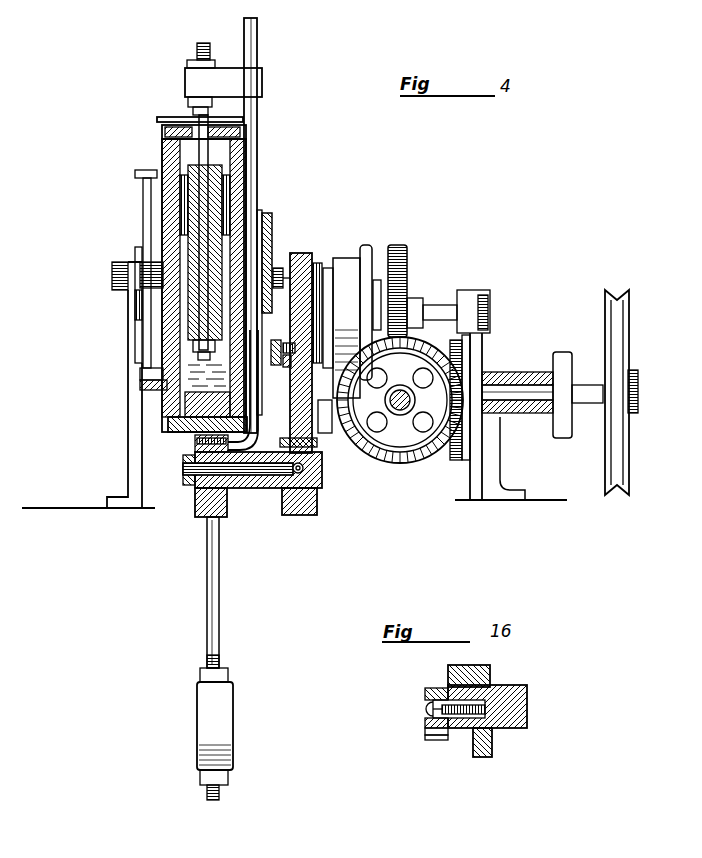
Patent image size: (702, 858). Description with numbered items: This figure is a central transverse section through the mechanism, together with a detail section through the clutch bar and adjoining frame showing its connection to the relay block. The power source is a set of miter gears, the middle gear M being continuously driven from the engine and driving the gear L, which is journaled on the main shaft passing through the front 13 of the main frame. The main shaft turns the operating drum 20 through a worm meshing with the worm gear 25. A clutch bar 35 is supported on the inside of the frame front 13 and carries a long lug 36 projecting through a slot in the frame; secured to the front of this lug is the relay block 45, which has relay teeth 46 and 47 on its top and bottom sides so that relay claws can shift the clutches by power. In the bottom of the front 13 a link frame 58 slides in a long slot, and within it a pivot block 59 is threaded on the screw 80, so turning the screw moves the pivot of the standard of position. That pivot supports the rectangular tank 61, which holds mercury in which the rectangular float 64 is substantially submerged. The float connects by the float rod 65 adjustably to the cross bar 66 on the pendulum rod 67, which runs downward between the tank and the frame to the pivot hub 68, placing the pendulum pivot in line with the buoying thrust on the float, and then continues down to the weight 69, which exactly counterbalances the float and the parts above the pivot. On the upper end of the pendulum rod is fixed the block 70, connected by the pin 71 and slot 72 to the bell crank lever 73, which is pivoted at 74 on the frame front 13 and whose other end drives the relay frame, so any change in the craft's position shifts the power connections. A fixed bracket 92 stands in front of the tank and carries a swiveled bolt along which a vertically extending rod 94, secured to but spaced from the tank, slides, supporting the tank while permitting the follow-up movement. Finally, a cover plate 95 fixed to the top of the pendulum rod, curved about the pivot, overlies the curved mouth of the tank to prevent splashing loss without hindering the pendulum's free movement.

In FIG. 4, the front of the main frame 13 is at (312, 443).
In FIG. 16, the front of the main frame 13 is at (494, 748).
In FIG. 4, the operating drum 20 is at (352, 321).
In FIG. 4, the worm gear 25 is at (405, 281).
In FIG. 16, the clutch bar 35 is at (529, 700).
In FIG. 16, the long lug 36 is at (465, 722).
In FIG. 16, the relay block 45 is at (435, 688).
In FIG. 16, the relay teeth 46 is at (428, 731).
In FIG. 16, the relay teeth 47 is at (428, 739).
In FIG. 4, the link frame 58 is at (314, 497).
In FIG. 4, the pivot block 59 is at (316, 474).
In FIG. 4, the tank 61 is at (178, 328).
In FIG. 4, the float 64 is at (223, 207).
In FIG. 4, the float rod 65 is at (163, 150).
In FIG. 4, the cross bar 66 is at (223, 79).
In FIG. 4, the pendulum rod 67 is at (258, 108).
In FIG. 4, the pivot hub 68 is at (195, 440).
In FIG. 4, the weight 69 is at (222, 707).
In FIG. 4, the block 70 is at (273, 232).
In FIG. 4, the pin 71 is at (271, 273).
In FIG. 4, the slot 72 is at (266, 215).
In FIG. 4, the bell crank lever 73 is at (286, 270).
In FIG. 4, the pivot 74 is at (293, 348).
In FIG. 4, the screw 80 is at (310, 463).
In FIG. 4, the fixed bracket 92 is at (135, 396).
In FIG. 4, the vertically extending rod 94 is at (148, 220).
In FIG. 4, the cover plate 95 is at (169, 117).
In FIG. 4, the miter gear L is at (412, 456).
In FIG. 4, the miter gear M is at (470, 445).